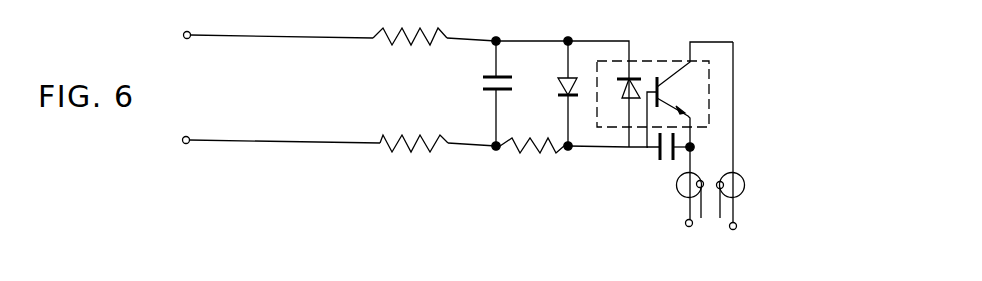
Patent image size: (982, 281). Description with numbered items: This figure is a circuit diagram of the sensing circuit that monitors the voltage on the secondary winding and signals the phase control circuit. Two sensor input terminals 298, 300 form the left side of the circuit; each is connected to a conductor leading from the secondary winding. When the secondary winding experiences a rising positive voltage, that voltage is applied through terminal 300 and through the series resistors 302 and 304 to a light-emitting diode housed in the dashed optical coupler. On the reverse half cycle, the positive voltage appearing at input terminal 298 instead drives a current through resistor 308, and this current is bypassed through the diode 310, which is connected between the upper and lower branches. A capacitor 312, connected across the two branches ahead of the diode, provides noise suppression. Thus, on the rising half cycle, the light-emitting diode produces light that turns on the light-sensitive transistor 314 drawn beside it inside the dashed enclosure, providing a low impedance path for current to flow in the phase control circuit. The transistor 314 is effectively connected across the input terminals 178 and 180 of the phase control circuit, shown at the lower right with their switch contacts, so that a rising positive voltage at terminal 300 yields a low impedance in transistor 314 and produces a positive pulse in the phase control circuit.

The sensor input terminal 298 is at (189, 38).
The sensor input terminal 300 is at (188, 136).
The resistor 302 is at (426, 149).
The resistor 304 is at (537, 150).
The resistor 308 is at (418, 42).
The diode 310 is at (560, 88).
The capacitor 312 is at (483, 84).
The light-sensitive transistor 314 is at (660, 90).
The input terminal of phase control circuit 178 is at (685, 222).
The input terminal of phase control circuit 180 is at (738, 225).